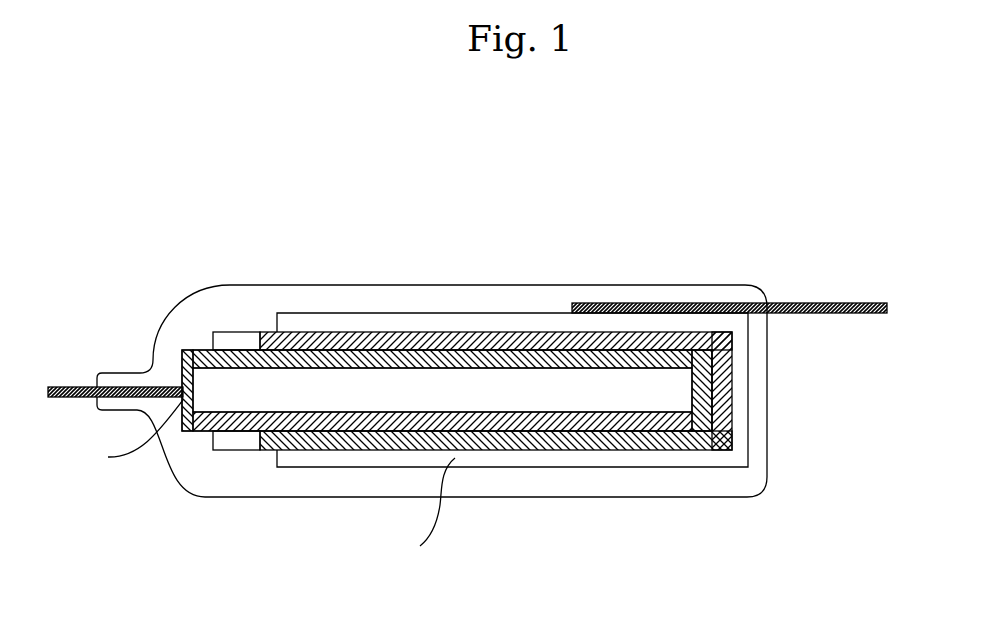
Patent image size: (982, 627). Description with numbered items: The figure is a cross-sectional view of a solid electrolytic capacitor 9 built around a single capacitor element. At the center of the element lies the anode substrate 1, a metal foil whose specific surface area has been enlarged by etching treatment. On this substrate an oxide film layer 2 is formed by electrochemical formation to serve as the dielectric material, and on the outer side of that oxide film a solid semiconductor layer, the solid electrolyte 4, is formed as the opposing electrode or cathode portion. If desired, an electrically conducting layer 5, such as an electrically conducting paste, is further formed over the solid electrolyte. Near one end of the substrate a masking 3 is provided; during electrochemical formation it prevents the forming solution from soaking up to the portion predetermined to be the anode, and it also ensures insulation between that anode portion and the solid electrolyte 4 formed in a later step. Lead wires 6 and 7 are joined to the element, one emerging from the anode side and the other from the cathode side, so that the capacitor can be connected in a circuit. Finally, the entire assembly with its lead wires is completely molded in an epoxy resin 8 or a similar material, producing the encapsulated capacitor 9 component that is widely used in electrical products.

The anode substrate 1 is at (227, 398).
The oxide film layer 2 is at (378, 337).
The masking 3 is at (242, 340).
The solid electrolyte 4 is at (458, 337).
The electrically conducting layer 5 is at (267, 490).
The lead wire 6 is at (84, 386).
The lead wire 7 is at (818, 303).
The epoxy resin 8 is at (650, 478).
The capacitor 9 is at (703, 245).